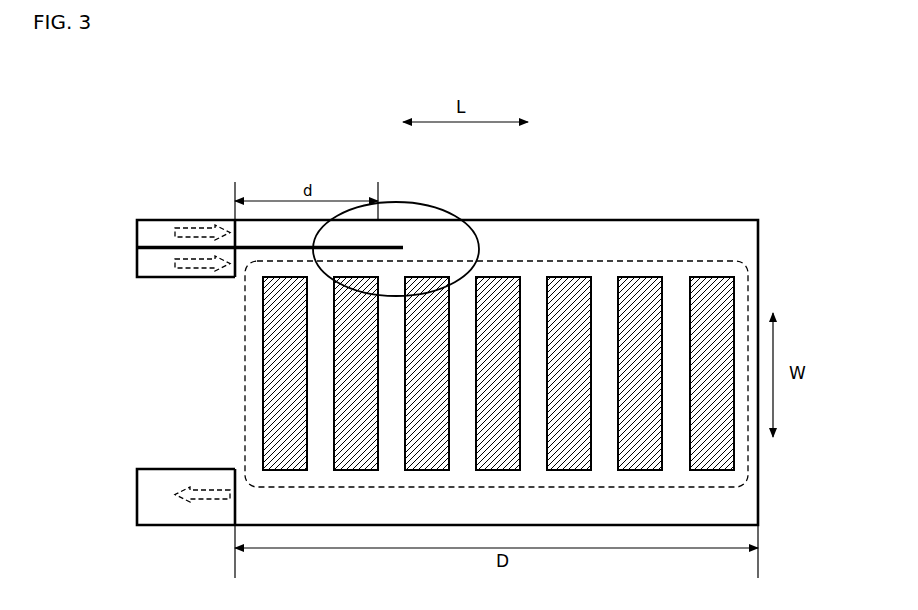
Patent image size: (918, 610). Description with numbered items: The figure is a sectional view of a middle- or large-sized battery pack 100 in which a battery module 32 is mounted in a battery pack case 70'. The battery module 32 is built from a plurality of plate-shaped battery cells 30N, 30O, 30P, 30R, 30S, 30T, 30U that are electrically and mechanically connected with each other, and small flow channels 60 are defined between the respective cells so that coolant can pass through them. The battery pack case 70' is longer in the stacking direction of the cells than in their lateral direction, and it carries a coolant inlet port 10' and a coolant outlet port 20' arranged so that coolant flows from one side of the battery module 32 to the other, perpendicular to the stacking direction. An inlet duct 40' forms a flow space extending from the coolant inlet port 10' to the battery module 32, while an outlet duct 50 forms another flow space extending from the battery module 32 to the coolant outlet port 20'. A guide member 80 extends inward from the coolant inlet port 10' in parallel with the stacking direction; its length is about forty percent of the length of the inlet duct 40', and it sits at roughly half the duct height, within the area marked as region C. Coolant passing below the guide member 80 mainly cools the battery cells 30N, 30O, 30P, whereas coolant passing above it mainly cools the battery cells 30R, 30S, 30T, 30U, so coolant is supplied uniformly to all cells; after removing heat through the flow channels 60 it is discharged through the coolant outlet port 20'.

The middle- or large-sized battery pack 100 is at (75, 106).
The coolant inlet port 10' is at (160, 229).
The coolant outlet port 20' is at (154, 506).
The guide member 80 is at (153, 246).
The inlet duct 40' is at (177, 298).
The outlet duct 50 is at (148, 484).
The battery module 32 is at (683, 260).
The flow channels 60 is at (602, 286).
The battery pack case 70' is at (496, 332).
The battery cell 30N is at (275, 432).
The battery cell 30O is at (352, 468).
The battery cell 30P is at (424, 468).
The battery cell 30U is at (495, 468).
The battery cell 30T is at (567, 468).
The battery cell 30S is at (640, 468).
The battery cell 30R is at (712, 468).
The region C is at (415, 205).